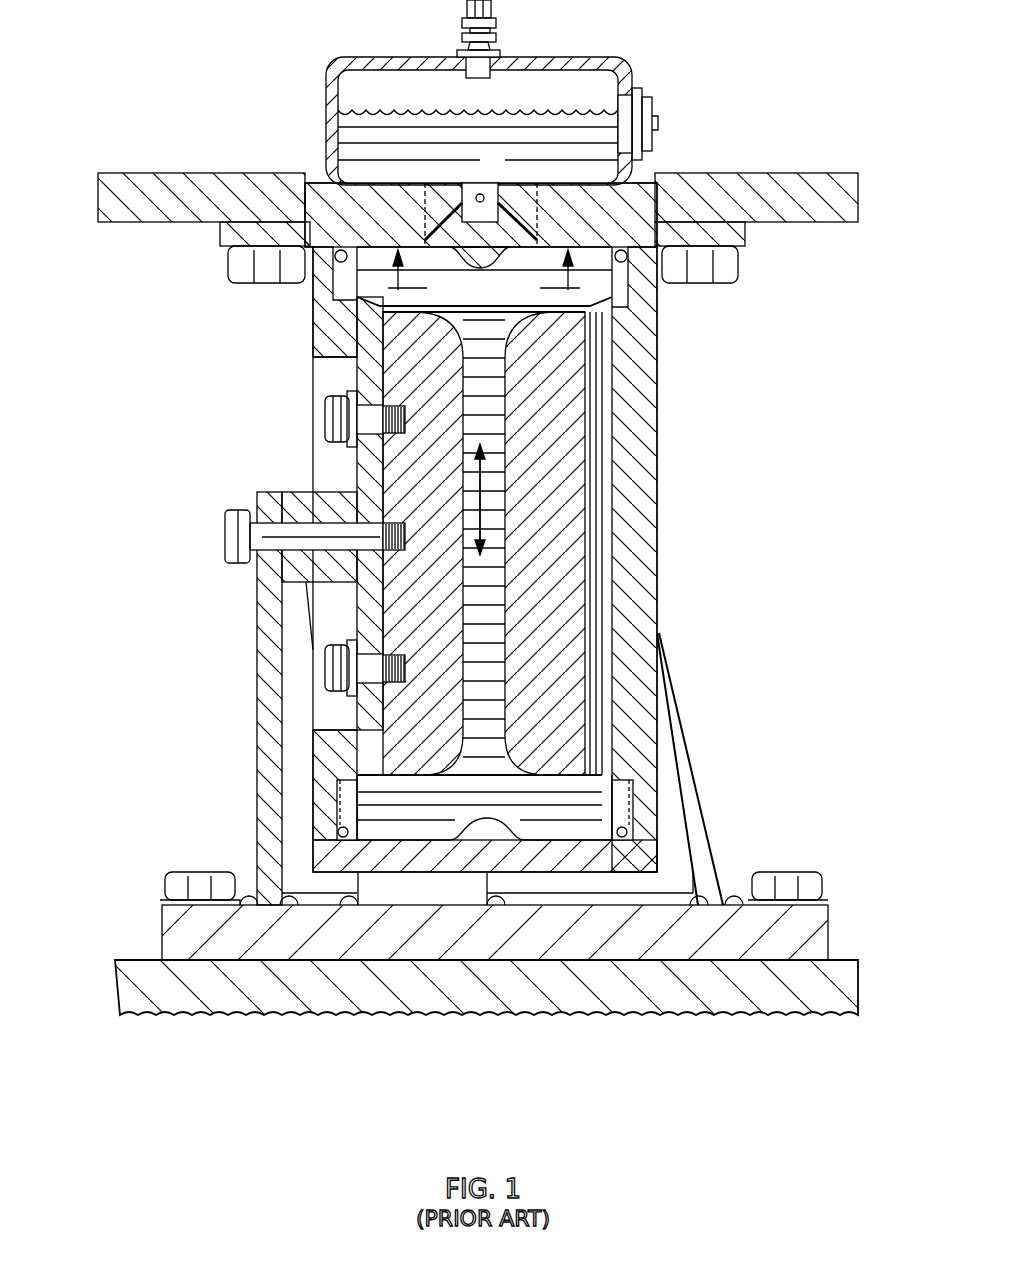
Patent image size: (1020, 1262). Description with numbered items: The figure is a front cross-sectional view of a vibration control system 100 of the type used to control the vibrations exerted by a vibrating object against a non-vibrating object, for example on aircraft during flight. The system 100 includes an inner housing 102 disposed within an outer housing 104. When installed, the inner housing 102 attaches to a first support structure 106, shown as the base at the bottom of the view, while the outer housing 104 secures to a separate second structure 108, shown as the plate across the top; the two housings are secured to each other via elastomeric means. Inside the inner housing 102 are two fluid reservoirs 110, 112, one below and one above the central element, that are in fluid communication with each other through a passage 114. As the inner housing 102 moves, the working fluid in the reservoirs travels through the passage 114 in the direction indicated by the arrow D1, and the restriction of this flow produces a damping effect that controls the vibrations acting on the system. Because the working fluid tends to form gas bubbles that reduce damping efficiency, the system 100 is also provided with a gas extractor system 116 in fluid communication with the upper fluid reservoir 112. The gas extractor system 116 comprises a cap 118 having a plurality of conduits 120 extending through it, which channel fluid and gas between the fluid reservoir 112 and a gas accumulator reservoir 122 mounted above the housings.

The vibration control system 100 is at (148, 48).
The inner housing 102 is at (355, 462).
The outer housing 104 is at (657, 433).
The first support structure 106 is at (142, 960).
The second structure 108 is at (793, 172).
The fluid reservoir 110 is at (377, 807).
The fluid reservoir 112 is at (548, 298).
The passage 114 is at (503, 547).
The gas extractor system 116 is at (688, 89).
The cap 118 is at (543, 197).
The conduits 120 is at (428, 207).
The gas accumulator reservoir 122 is at (590, 88).
The arrow D1 is at (488, 492).